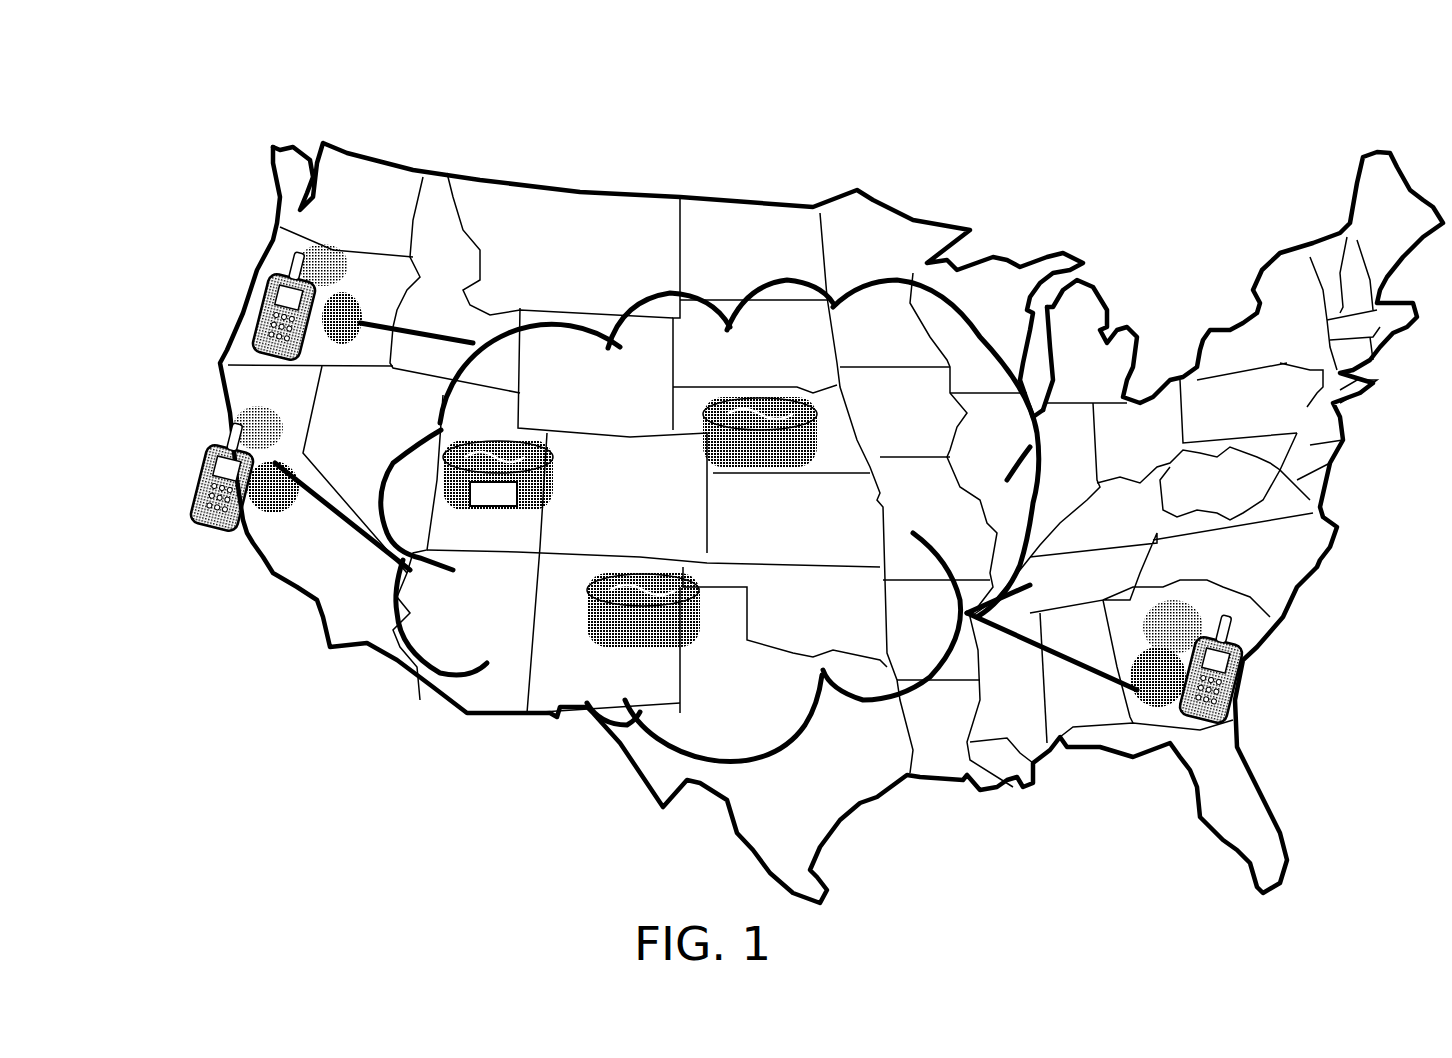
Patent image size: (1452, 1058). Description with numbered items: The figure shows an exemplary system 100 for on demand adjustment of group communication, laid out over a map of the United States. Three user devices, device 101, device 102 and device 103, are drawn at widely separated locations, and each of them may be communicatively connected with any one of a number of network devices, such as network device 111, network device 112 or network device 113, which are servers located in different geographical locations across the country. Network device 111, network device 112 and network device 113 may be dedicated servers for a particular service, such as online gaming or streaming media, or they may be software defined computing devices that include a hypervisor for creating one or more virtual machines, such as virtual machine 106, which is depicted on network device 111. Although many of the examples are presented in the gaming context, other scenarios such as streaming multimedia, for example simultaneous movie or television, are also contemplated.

The system 100 is at (1205, 77).
The device 101 is at (193, 482).
The device 102 is at (257, 277).
The device 103 is at (1240, 678).
The virtual machine 106 is at (500, 510).
The network device 111 is at (563, 468).
The network device 112 is at (757, 395).
The network device 113 is at (640, 636).